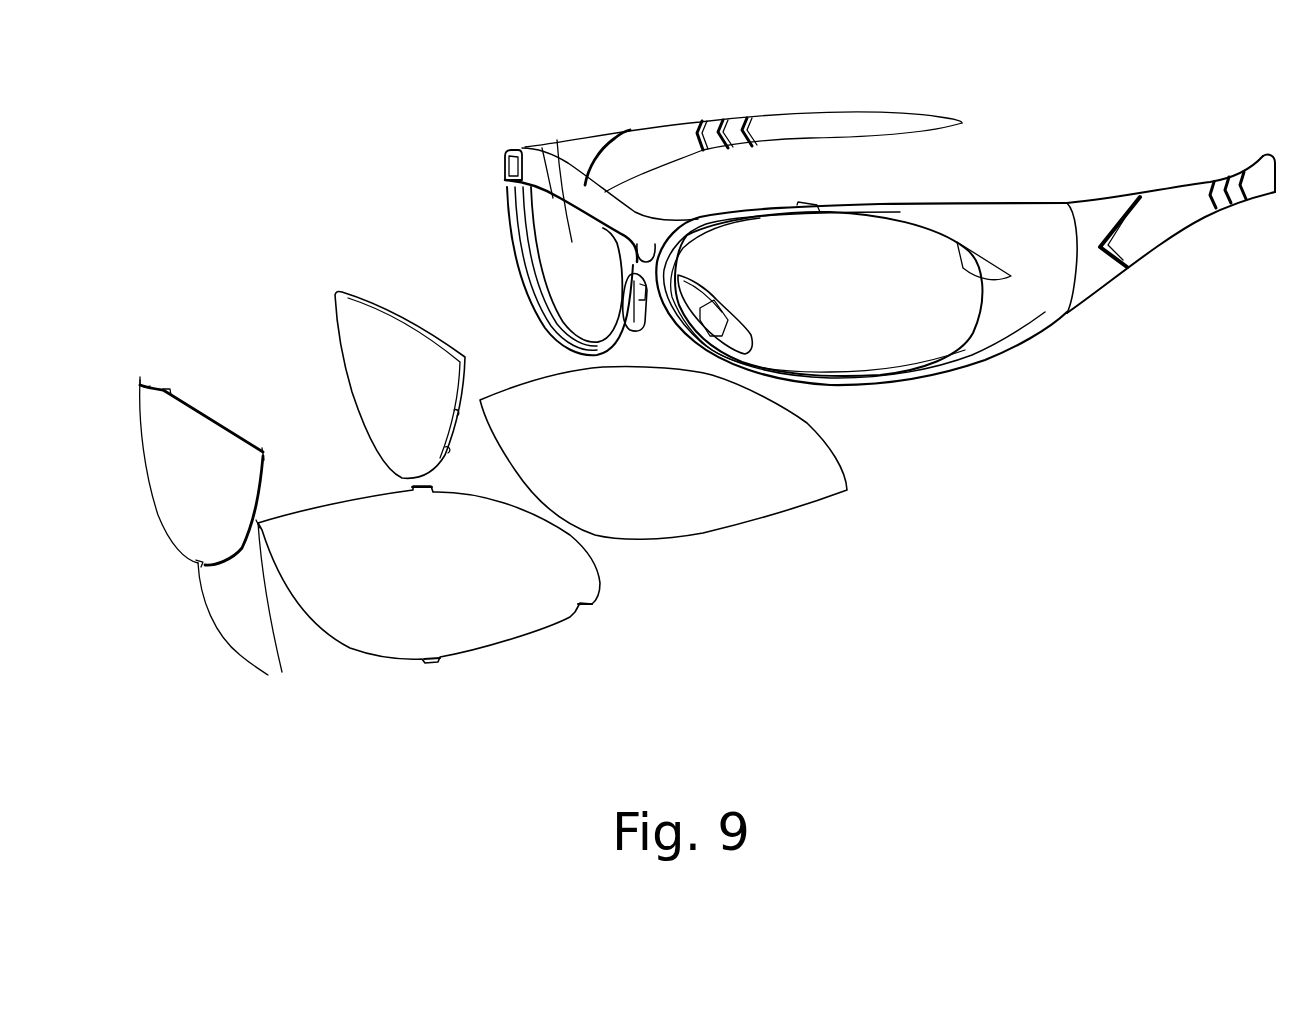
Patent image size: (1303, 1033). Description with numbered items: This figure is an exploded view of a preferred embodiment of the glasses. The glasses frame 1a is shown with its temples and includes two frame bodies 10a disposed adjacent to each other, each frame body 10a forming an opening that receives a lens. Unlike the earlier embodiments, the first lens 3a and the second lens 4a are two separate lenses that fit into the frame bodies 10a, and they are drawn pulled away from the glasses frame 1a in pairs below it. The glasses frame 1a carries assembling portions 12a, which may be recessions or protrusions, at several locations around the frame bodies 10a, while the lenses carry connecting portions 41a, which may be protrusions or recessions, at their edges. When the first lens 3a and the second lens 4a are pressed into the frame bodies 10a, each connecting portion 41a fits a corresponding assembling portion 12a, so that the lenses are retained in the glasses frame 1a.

The glasses frame 1a is at (522, 148).
The frame body 10a is at (583, 263).
The assembling portion 12a is at (797, 187).
The first lens 3a is at (348, 336).
The second lens 4a is at (177, 515).
The connecting portion 41a is at (408, 483).